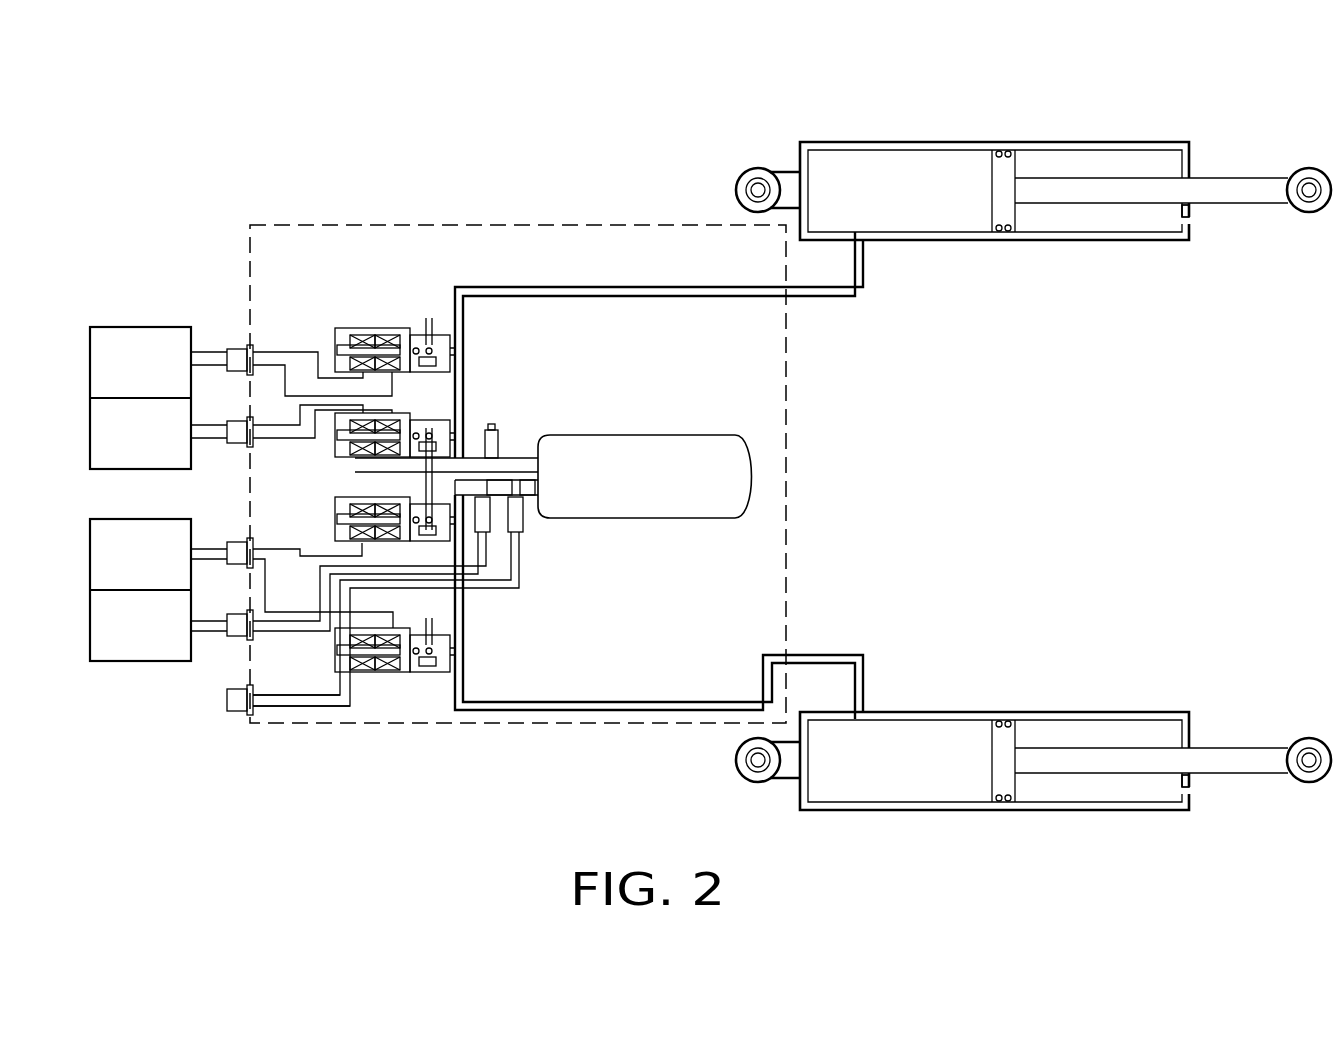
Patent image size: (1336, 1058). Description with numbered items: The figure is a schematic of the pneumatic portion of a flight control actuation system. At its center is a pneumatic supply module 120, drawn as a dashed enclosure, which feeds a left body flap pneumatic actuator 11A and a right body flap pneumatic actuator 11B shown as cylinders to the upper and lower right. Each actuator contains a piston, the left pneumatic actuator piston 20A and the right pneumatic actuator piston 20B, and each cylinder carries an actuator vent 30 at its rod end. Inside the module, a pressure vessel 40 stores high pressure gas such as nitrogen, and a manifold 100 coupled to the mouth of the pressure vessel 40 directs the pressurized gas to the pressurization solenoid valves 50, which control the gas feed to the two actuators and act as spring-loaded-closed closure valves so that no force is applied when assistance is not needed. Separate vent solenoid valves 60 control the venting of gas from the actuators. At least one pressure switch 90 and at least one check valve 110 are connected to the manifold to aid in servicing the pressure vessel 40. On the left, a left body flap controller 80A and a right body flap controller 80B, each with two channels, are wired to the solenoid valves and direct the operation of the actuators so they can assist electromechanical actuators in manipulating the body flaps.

The left pneumatic actuator piston 20A is at (1208, 160).
The right pneumatic actuator piston 20B is at (1236, 790).
The actuator vent 30 is at (1206, 234).
The left body flap pneumatic actuator 11A is at (893, 446).
The right body flap pneumatic actuator 11B is at (893, 672).
The pneumatic supply module 120 is at (790, 463).
The pressure vessel 40 is at (656, 418).
The check valve 110 is at (500, 428).
The manifold 100 is at (530, 500).
The pressure switch 90 is at (488, 545).
The pressurization solenoid valve 50 is at (343, 492).
The vent solenoid valve 60 is at (338, 316).
The left body flap controller 80A is at (132, 326).
The right body flap controller 80B is at (157, 518).